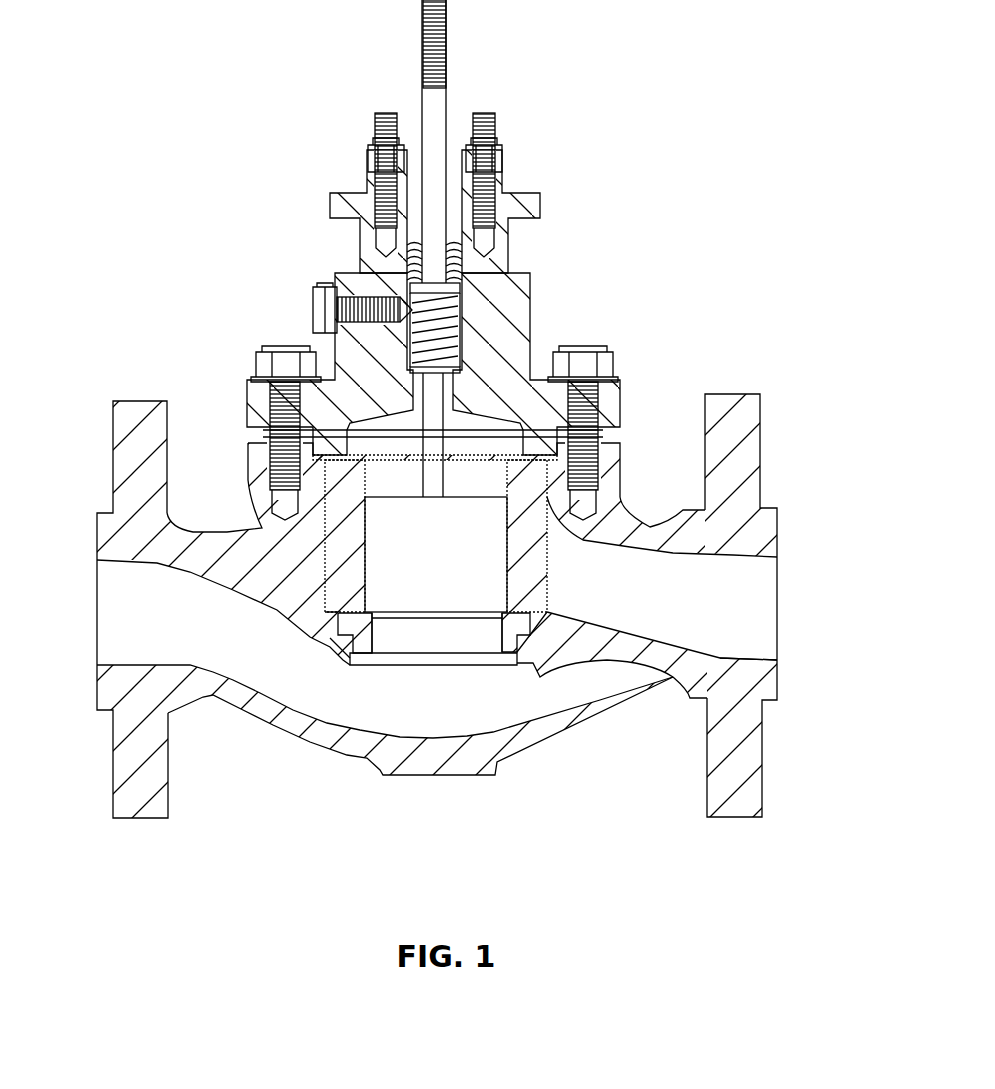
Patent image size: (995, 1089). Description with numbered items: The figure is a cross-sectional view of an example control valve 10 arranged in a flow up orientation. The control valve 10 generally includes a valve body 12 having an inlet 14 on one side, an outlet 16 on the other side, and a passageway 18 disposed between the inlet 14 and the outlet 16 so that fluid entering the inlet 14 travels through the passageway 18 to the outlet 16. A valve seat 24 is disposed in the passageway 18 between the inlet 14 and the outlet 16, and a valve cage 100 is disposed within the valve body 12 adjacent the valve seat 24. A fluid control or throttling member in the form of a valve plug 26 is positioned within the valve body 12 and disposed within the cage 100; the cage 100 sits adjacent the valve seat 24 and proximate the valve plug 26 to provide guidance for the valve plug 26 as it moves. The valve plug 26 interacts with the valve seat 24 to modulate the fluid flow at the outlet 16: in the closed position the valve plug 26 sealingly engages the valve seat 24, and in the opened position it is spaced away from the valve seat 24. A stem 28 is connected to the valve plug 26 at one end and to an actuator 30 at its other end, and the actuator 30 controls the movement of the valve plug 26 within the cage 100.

The control valve 10 is at (444, 436).
The valve body 12 is at (775, 528).
The inlet 14 is at (110, 597).
The outlet 16 is at (765, 622).
The passageway 18 is at (352, 638).
The valve seat 24 is at (372, 635).
The valve plug 26 is at (457, 593).
The stem 28 is at (437, 385).
The actuator 30 is at (510, 260).
The valve cage 100 is at (538, 497).